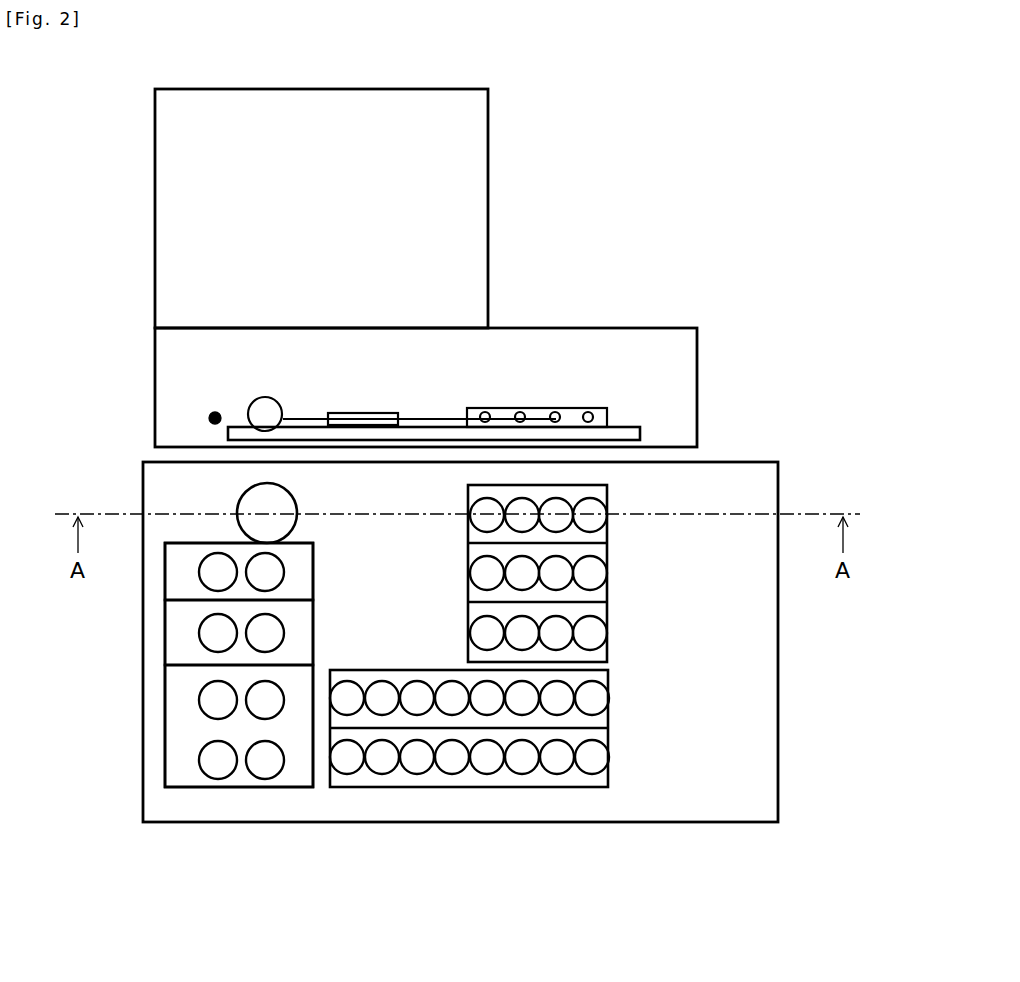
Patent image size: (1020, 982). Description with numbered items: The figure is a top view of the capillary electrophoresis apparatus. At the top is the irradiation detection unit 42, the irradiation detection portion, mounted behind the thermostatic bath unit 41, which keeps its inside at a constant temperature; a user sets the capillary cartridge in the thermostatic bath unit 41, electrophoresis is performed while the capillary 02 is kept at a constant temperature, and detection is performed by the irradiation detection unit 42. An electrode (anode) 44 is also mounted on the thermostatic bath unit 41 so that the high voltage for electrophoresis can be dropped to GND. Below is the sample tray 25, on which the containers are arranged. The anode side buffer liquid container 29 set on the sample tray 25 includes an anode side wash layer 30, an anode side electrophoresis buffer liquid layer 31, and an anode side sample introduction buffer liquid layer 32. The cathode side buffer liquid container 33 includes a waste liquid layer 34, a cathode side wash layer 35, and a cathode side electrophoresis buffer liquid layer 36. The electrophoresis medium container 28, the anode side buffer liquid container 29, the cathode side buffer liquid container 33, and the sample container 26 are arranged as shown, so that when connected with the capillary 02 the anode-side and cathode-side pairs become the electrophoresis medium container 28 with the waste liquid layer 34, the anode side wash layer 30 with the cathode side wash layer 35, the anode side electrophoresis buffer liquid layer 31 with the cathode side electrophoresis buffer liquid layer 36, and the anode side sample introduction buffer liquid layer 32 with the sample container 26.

The capillary 02 is at (432, 417).
The sample tray 25 is at (407, 810).
The sample container 26 is at (592, 695).
The electrophoresis medium container 28 is at (243, 505).
The anode side buffer liquid container 29 is at (223, 788).
The anode side wash layer 30 is at (190, 577).
The anode side electrophoresis buffer liquid layer 31 is at (188, 635).
The anode side sample introduction buffer liquid layer 32 is at (200, 718).
The cathode side buffer liquid container 33 is at (607, 513).
The waste liquid layer 34 is at (607, 513).
The cathode side wash layer 35 is at (592, 583).
The cathode side electrophoresis buffer liquid layer 36 is at (592, 640).
The thermostatic bath unit 41 is at (673, 360).
The irradiation detection unit 42 is at (467, 160).
The electrode (anode) 44 is at (210, 412).